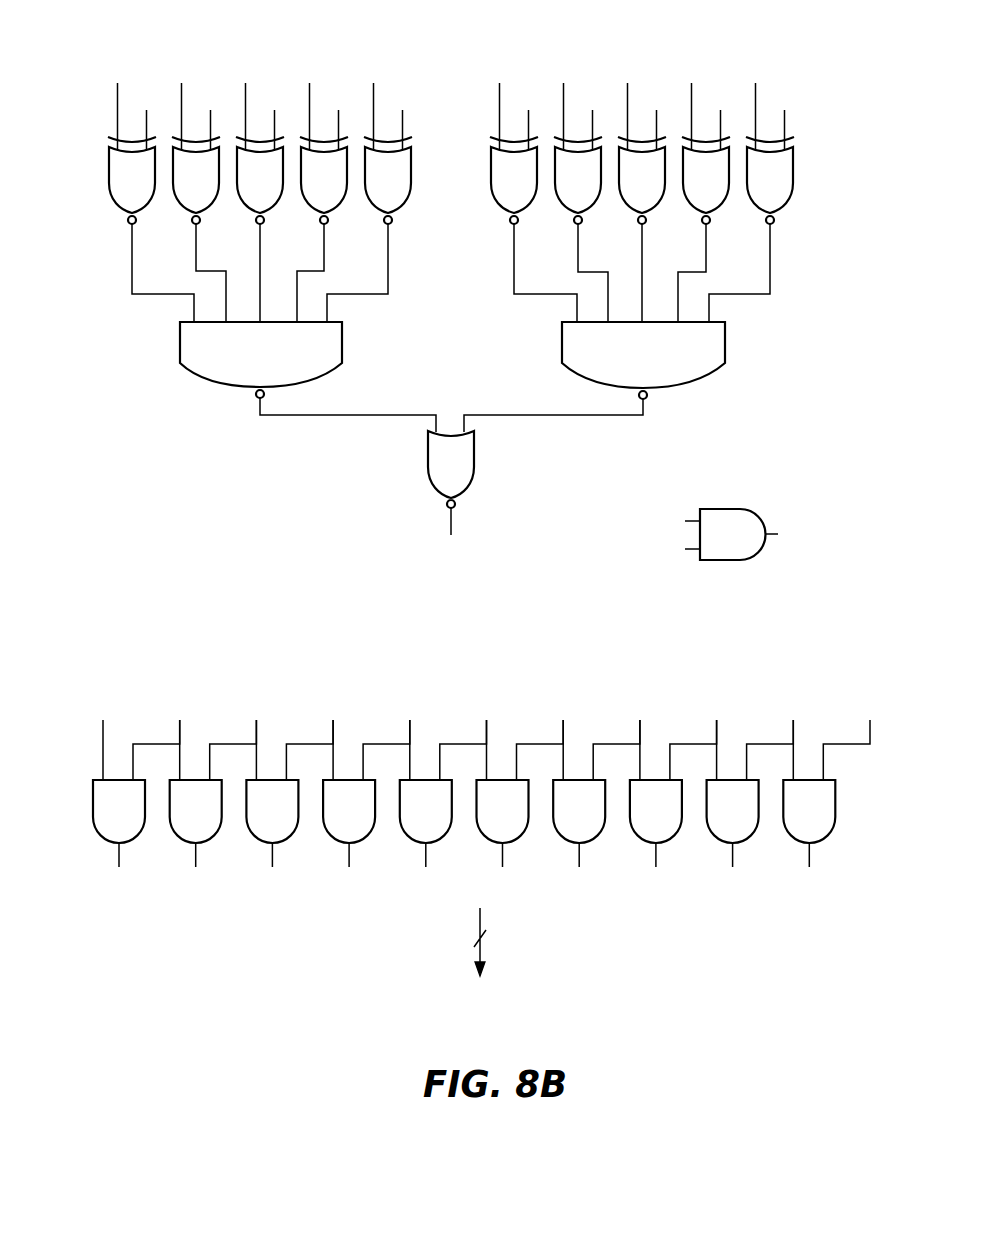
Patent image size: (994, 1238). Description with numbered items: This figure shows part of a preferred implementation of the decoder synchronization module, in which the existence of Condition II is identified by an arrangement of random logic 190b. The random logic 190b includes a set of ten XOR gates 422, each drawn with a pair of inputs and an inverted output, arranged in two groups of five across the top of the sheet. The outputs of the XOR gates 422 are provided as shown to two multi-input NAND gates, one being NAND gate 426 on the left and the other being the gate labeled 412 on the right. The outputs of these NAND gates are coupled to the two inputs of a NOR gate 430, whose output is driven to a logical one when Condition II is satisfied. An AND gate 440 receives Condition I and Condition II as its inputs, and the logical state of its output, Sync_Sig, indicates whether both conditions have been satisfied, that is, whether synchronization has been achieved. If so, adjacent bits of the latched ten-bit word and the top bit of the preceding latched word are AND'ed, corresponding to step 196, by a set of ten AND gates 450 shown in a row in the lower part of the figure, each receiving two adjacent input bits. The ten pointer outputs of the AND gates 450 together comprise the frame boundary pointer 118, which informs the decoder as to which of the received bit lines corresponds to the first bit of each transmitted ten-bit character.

The random logic 190b is at (822, 101).
The XOR gates 422 is at (121, 193).
The NAND gate 426 is at (337, 347).
The NAND gate 412 is at (720, 347).
The NOR gate 430 is at (463, 467).
The AND gate 440 is at (731, 550).
The step 196 is at (835, 666).
The AND gates 450 is at (103, 822).
The frame boundary pointer 118 is at (512, 959).